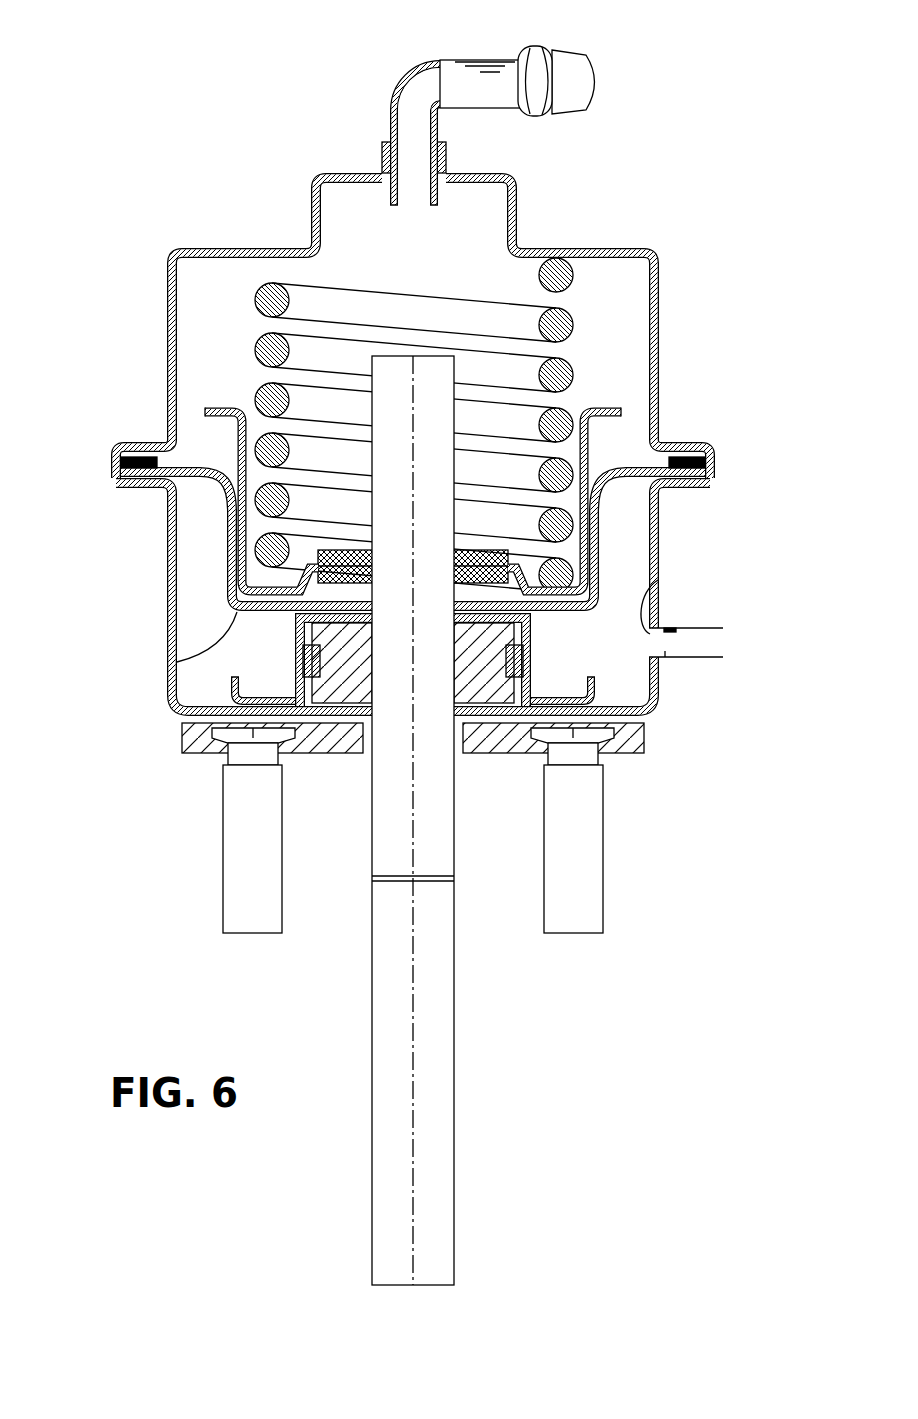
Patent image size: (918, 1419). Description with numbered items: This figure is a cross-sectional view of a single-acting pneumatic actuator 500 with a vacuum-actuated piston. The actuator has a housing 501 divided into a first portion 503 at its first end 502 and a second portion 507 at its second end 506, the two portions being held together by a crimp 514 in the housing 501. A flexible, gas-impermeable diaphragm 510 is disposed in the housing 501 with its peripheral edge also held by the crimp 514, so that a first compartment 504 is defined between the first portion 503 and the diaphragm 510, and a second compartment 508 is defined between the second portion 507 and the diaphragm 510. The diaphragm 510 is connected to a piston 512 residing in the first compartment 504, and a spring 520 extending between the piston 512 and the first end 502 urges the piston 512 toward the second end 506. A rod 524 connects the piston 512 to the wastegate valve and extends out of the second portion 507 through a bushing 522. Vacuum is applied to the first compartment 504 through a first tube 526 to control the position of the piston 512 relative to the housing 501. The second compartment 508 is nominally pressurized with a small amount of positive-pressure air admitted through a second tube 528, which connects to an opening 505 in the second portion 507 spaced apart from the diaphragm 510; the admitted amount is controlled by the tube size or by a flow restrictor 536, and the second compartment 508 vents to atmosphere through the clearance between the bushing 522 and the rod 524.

The single-acting pneumatic actuator 500 is at (739, 126).
The housing 501 is at (750, 364).
The first end 502 is at (570, 248).
The first portion 503 is at (660, 404).
The first compartment 504 is at (628, 303).
The opening 505 is at (645, 598).
The second end 506 is at (650, 714).
The second portion 507 is at (660, 524).
The second compartment 508 is at (632, 680).
The diaphragm 510 is at (236, 612).
The piston 512 is at (347, 536).
The crimp 514 is at (122, 463).
The spring 520 is at (268, 351).
The bushing 522 is at (488, 683).
The rod 524 is at (433, 980).
The first tube 526 is at (496, 64).
The second tube 528 is at (704, 657).
The flow restrictor 536 is at (665, 629).